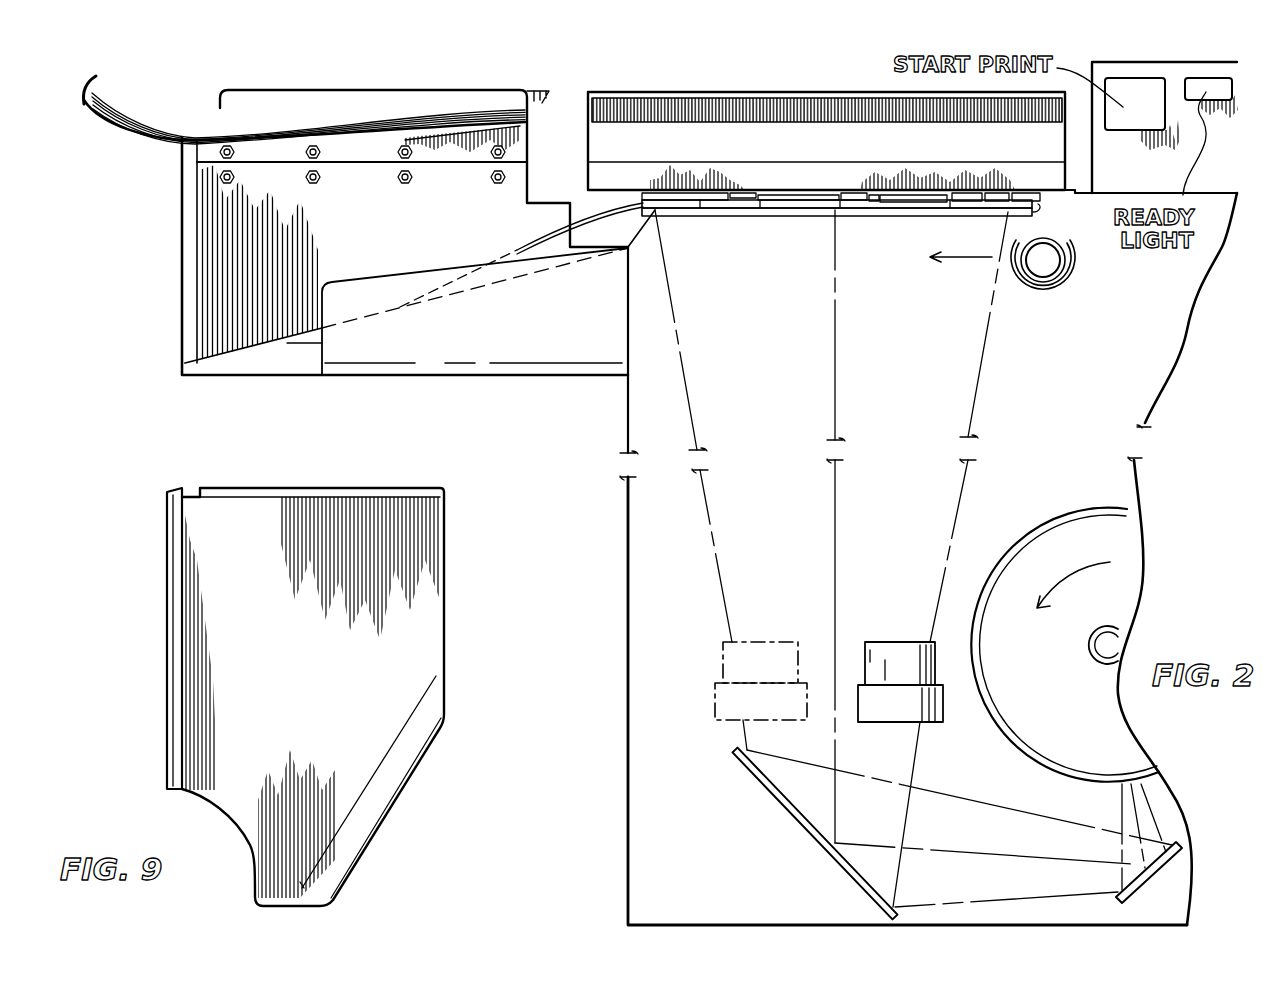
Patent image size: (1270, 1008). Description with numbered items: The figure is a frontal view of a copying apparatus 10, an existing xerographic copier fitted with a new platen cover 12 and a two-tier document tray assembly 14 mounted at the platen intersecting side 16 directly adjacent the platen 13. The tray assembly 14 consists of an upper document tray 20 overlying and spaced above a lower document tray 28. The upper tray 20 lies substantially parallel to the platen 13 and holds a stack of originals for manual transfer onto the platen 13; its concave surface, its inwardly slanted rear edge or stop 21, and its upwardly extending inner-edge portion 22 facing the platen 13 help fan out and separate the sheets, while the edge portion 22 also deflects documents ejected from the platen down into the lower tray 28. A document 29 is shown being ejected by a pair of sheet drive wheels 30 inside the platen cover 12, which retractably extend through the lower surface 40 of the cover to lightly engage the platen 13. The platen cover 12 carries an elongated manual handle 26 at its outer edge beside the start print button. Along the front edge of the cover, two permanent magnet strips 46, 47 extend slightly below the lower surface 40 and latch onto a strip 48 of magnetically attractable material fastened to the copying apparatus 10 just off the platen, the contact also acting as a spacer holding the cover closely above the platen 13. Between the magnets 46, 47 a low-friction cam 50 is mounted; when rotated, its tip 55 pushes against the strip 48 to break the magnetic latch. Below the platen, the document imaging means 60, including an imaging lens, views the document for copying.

In FIG. 2, the copying apparatus 10 is at (630, 82).
In FIG. 2, the platen cover 12 is at (776, 145).
In FIG. 2, the platen 13 is at (1031, 216).
In FIG. 2, the document holding tray assembly 14 is at (503, 343).
In FIG. 2, the platen intersecting side 16 is at (632, 236).
In FIG. 2, the upper document tray 20 is at (360, 104).
In FIG. 9, the upper document tray 20 is at (420, 636).
In FIG. 2, the rear edge or stop 21 is at (262, 100).
In FIG. 2, the inner-edge portion 22 is at (507, 92).
In FIG. 2, the manual handle 26 is at (690, 93).
In FIG. 2, the lower document tray 28 is at (303, 335).
In FIG. 2, the document 29 is at (568, 212).
In FIG. 2, the sheet drive wheels 30 is at (672, 210).
In FIG. 2, the lower surface of the platen cover 40 is at (722, 210).
In FIG. 2, the permanent magnet strip 46 is at (798, 208).
In FIG. 2, the permanent magnet strip 47 is at (998, 203).
In FIG. 2, the strip of magnetically attractable material 48 is at (855, 210).
In FIG. 2, the cam 50 is at (922, 200).
In FIG. 2, the tip of the cam 55 is at (930, 203).
In FIG. 2, the document imaging means 60 is at (888, 600).